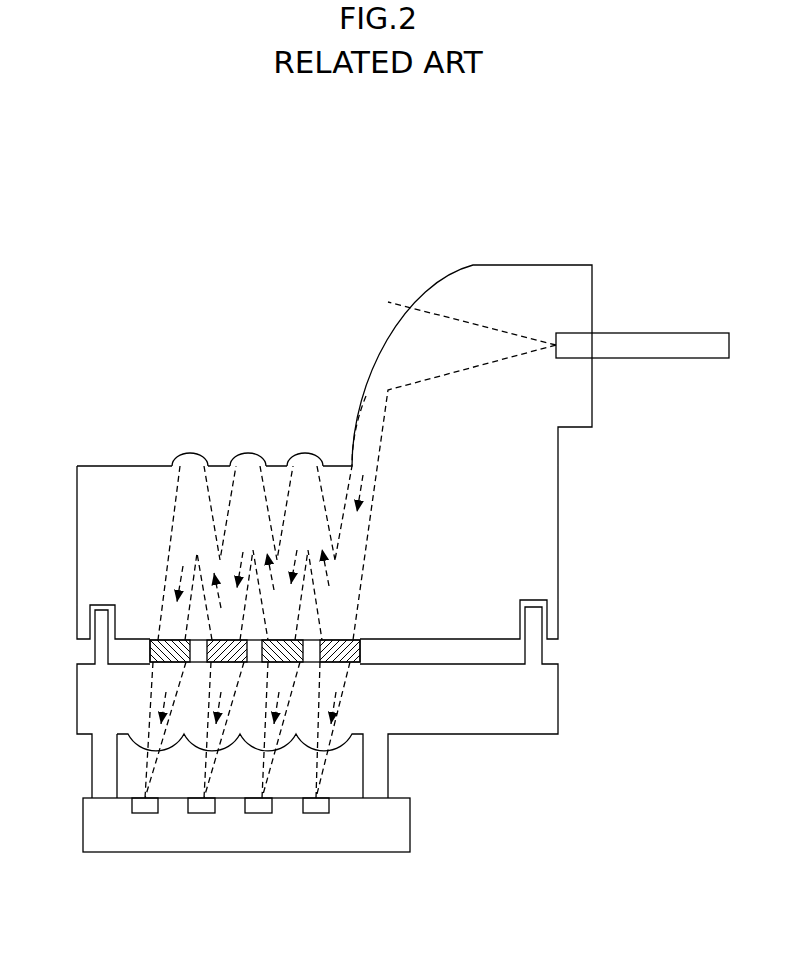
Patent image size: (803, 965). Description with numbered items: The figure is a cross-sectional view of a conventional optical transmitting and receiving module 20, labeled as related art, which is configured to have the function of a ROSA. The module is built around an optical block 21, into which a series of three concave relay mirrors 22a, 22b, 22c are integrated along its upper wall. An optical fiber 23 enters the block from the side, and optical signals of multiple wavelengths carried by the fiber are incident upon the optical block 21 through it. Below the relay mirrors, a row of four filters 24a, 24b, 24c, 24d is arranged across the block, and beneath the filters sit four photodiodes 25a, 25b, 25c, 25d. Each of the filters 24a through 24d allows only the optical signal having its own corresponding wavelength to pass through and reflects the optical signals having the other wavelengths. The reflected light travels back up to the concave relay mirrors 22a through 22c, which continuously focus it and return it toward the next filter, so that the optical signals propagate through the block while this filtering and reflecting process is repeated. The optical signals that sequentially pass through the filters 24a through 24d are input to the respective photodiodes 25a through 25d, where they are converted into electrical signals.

The optical transmitting and receiving module 20 is at (205, 328).
The optical block 21 is at (558, 532).
The concave relay mirror 22a is at (305, 453).
The concave relay mirror 22b is at (248, 453).
The concave relay mirror 22c is at (190, 453).
The optical fiber 23 is at (699, 360).
The filter 24a is at (368, 640).
The filter 24b is at (318, 639).
The filter 24c is at (258, 639).
The filter 24d is at (150, 652).
The photodiode 25a is at (317, 813).
The photodiode 25b is at (261, 813).
The photodiode 25c is at (204, 813).
The photodiode 25d is at (148, 813).